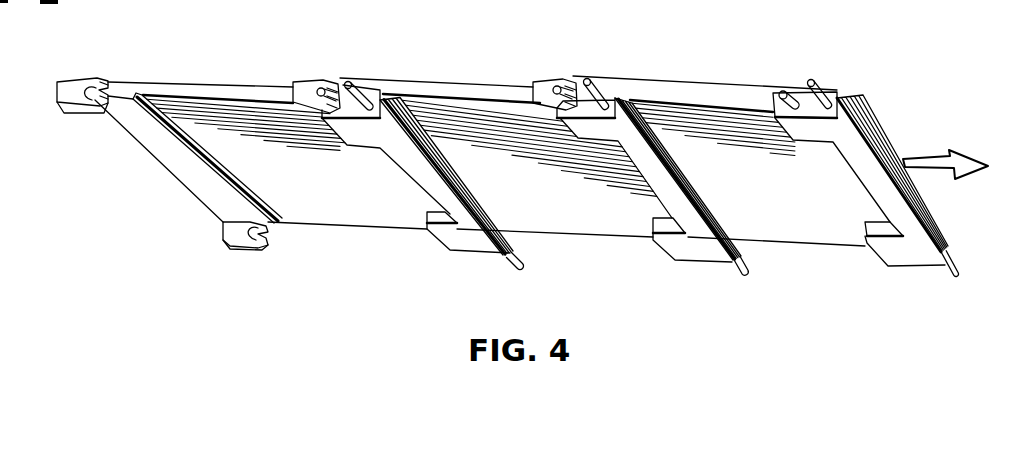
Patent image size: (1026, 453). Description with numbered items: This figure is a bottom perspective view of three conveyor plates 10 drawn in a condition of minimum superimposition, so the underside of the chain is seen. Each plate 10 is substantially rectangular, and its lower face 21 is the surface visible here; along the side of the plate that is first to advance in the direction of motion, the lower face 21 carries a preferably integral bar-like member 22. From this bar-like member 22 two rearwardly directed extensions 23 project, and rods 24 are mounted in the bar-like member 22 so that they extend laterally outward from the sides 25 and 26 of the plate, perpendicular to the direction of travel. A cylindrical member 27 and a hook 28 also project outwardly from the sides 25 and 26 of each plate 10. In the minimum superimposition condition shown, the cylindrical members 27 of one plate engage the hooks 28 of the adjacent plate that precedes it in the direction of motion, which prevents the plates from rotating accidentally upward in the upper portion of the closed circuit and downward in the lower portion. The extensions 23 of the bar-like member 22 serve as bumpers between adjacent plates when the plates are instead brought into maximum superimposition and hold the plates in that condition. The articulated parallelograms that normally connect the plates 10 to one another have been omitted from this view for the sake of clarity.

The plate 10 is at (211, 74).
The lower face 21 is at (310, 203).
The bar-like member 22 is at (420, 182).
The extensions 23 is at (360, 142).
The rods 24 is at (350, 84).
The side 25 is at (592, 234).
The side 26 is at (473, 92).
The cylindrical member 27 is at (322, 89).
The hook 28 is at (70, 90).